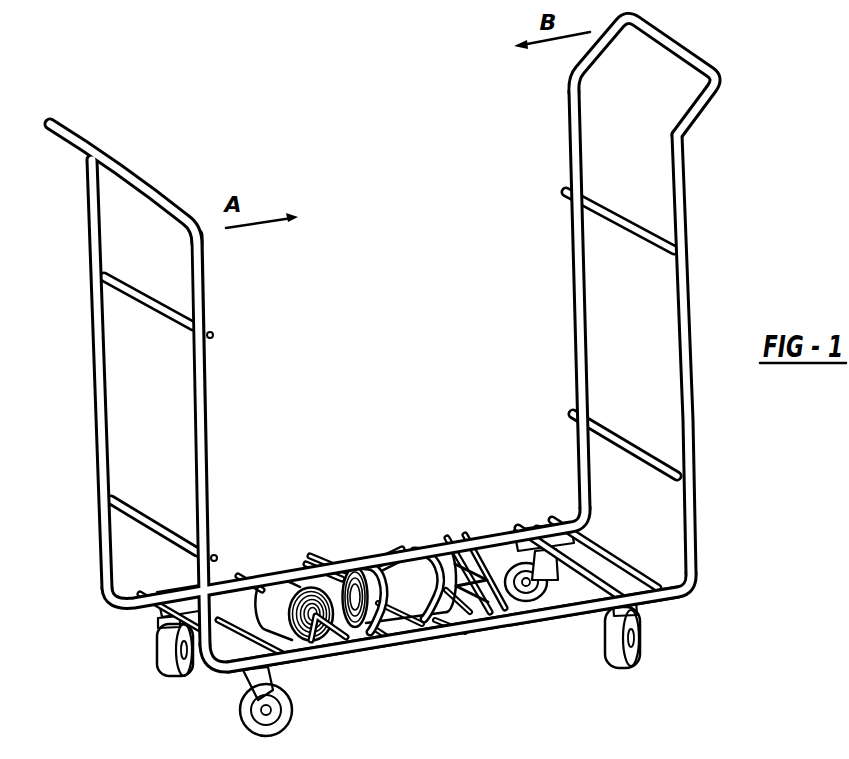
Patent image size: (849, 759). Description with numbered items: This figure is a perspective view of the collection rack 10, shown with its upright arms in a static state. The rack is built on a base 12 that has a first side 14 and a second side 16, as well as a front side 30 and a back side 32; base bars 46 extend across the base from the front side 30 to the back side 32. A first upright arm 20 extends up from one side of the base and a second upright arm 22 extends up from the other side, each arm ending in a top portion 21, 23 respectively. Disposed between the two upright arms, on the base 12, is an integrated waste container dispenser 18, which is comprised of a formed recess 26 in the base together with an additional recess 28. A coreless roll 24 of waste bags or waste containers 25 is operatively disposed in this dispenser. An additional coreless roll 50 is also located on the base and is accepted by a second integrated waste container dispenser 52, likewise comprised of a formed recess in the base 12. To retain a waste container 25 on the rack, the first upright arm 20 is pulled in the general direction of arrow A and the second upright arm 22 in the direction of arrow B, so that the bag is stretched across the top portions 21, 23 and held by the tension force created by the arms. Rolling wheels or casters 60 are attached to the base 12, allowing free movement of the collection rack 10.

The collection rack 10 is at (726, 205).
The base 12 is at (684, 584).
The first side 14 is at (220, 667).
The second side 16 is at (488, 545).
The integrated waste container dispenser 18 is at (390, 622).
The first upright arm 20 is at (680, 302).
The top portion 21 is at (664, 41).
The second upright arm 22 is at (205, 433).
The top portion 23 is at (83, 142).
The coreless roll 24 is at (404, 578).
The waste container 25 is at (358, 572).
The formed recess 26 is at (382, 625).
The additional recess 28 is at (443, 628).
The front side 30 is at (513, 624).
The back side 32 is at (470, 540).
The base bars 46 is at (500, 558).
The additional coreless roll 50 is at (275, 584).
The integrated waste container dispenser 52 is at (335, 641).
The casters 60 is at (612, 655).